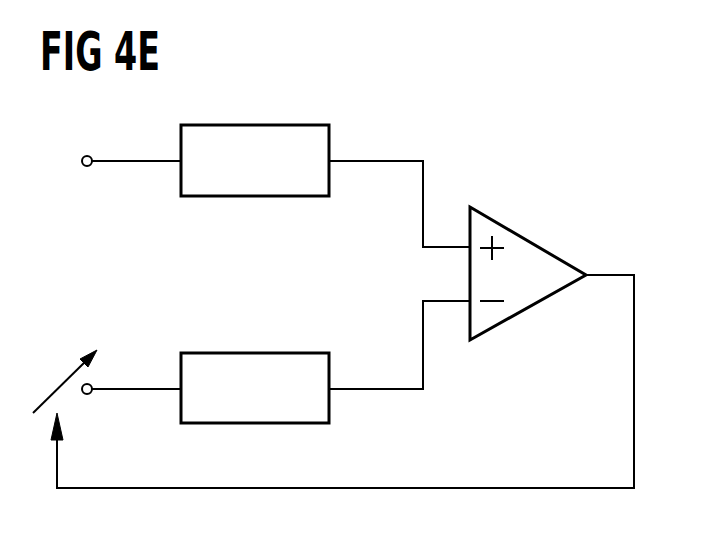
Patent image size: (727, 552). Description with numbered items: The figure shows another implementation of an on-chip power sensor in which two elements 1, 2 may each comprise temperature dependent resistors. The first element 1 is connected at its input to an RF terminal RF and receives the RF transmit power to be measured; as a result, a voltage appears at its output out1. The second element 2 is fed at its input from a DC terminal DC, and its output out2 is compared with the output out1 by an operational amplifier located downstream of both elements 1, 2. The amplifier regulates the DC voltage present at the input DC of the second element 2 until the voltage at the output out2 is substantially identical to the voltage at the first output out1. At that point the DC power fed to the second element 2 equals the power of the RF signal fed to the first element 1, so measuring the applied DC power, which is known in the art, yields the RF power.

The first element 1 is at (235, 197).
The second element 2 is at (275, 352).
The RF transmit power input RF is at (111, 160).
The DC voltage input DC is at (107, 381).
The first output out1 is at (399, 186).
The second output out2 is at (399, 345).